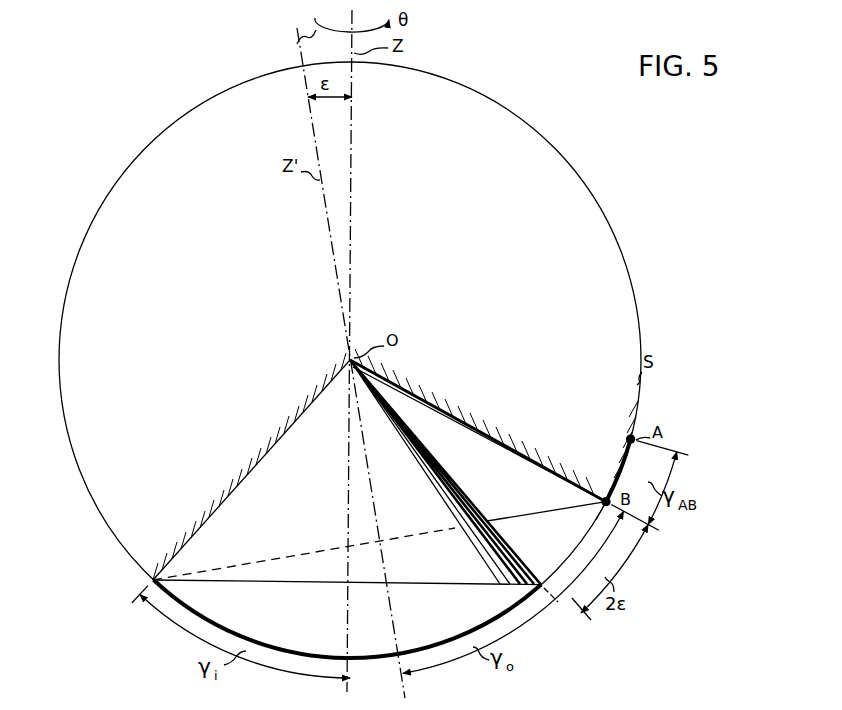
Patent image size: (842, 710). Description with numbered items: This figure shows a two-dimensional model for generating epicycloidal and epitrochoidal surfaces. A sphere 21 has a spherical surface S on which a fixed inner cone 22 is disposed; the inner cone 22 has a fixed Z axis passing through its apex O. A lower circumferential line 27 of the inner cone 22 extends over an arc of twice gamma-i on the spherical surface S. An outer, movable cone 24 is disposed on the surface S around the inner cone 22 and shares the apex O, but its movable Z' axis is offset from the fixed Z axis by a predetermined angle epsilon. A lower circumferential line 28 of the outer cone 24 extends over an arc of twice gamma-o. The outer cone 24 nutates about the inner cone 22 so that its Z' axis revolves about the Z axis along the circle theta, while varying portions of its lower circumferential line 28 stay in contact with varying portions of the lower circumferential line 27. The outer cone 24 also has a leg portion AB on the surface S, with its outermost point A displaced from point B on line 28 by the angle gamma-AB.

The sphere 21 is at (595, 197).
The fixed inner cone 22 is at (283, 511).
The outer movable cone 24 is at (466, 421).
The lower circumferential line of the inner cone 27 is at (276, 584).
The lower circumferential line of the outer movable cone 28 is at (541, 518).